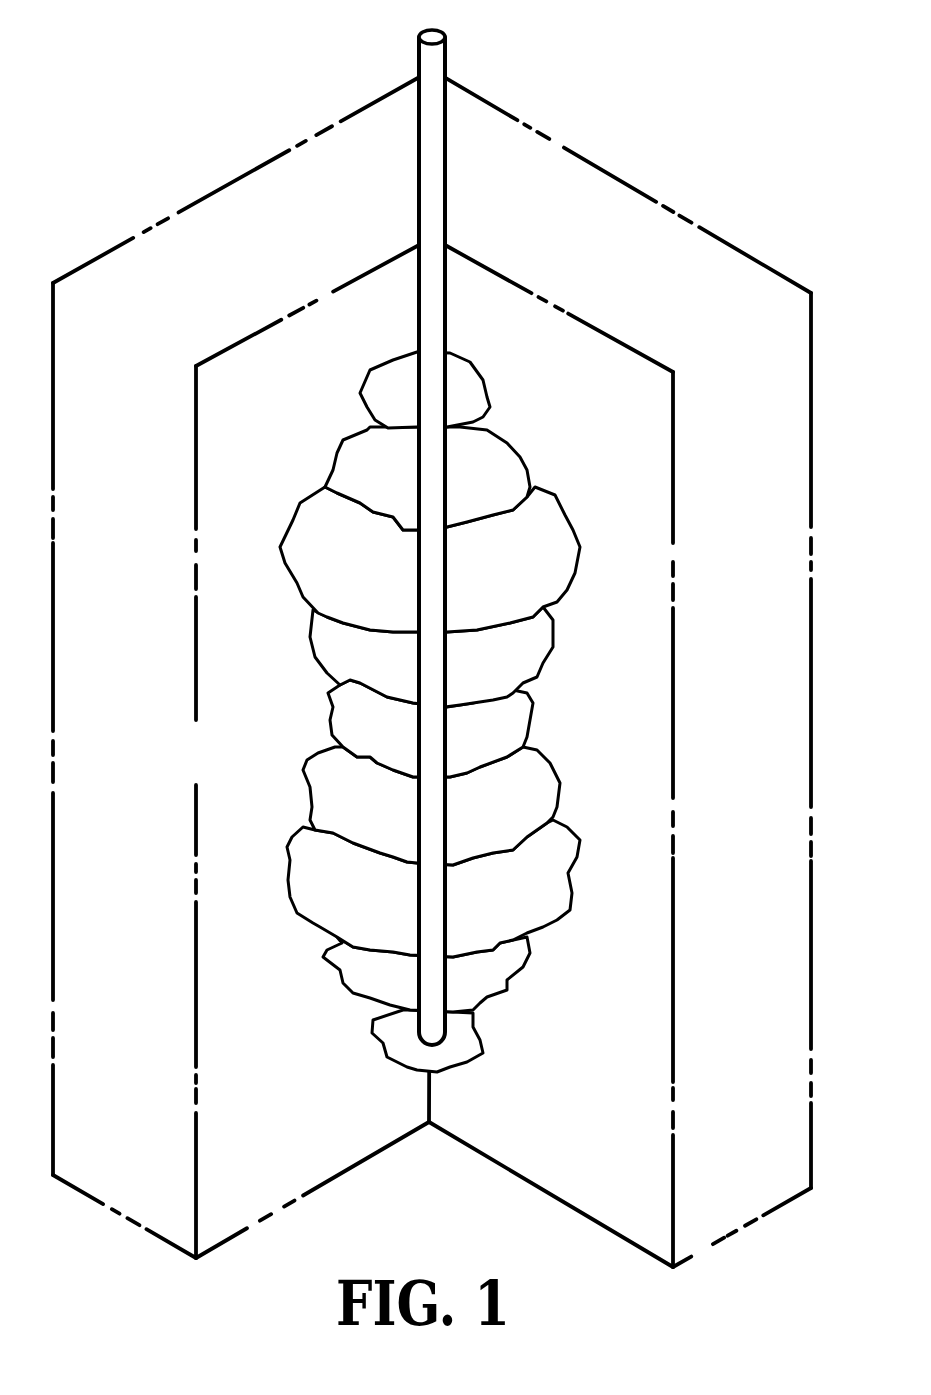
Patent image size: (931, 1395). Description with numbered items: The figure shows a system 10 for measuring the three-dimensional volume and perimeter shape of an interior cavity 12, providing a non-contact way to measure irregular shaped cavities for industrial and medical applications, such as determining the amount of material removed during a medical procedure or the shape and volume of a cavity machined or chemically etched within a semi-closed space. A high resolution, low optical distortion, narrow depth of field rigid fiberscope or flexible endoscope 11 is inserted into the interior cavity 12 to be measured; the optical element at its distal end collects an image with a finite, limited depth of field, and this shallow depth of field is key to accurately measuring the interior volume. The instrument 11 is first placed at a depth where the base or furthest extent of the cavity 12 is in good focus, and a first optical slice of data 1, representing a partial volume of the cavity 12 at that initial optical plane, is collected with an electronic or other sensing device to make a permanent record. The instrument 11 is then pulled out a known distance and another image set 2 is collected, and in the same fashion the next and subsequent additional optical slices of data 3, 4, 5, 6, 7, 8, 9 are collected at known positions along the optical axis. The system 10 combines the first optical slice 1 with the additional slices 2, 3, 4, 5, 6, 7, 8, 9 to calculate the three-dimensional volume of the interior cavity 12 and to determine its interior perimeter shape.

The first optical slice of data 1 is at (470, 1042).
The additional optical slice of data 2 is at (510, 967).
The additional optical slice of data 3 is at (557, 883).
The additional optical slice of data 4 is at (543, 792).
The additional optical slice of data 5 is at (510, 723).
The additional optical slice of data 6 is at (533, 642).
The additional optical slice of data 7 is at (562, 547).
The additional optical slice of data 8 is at (512, 465).
The additional optical slice of data 9 is at (457, 381).
The system 10 is at (272, 62).
The fiberscope or flexible endoscope 11 is at (450, 57).
The interior cavity 12 is at (409, 734).